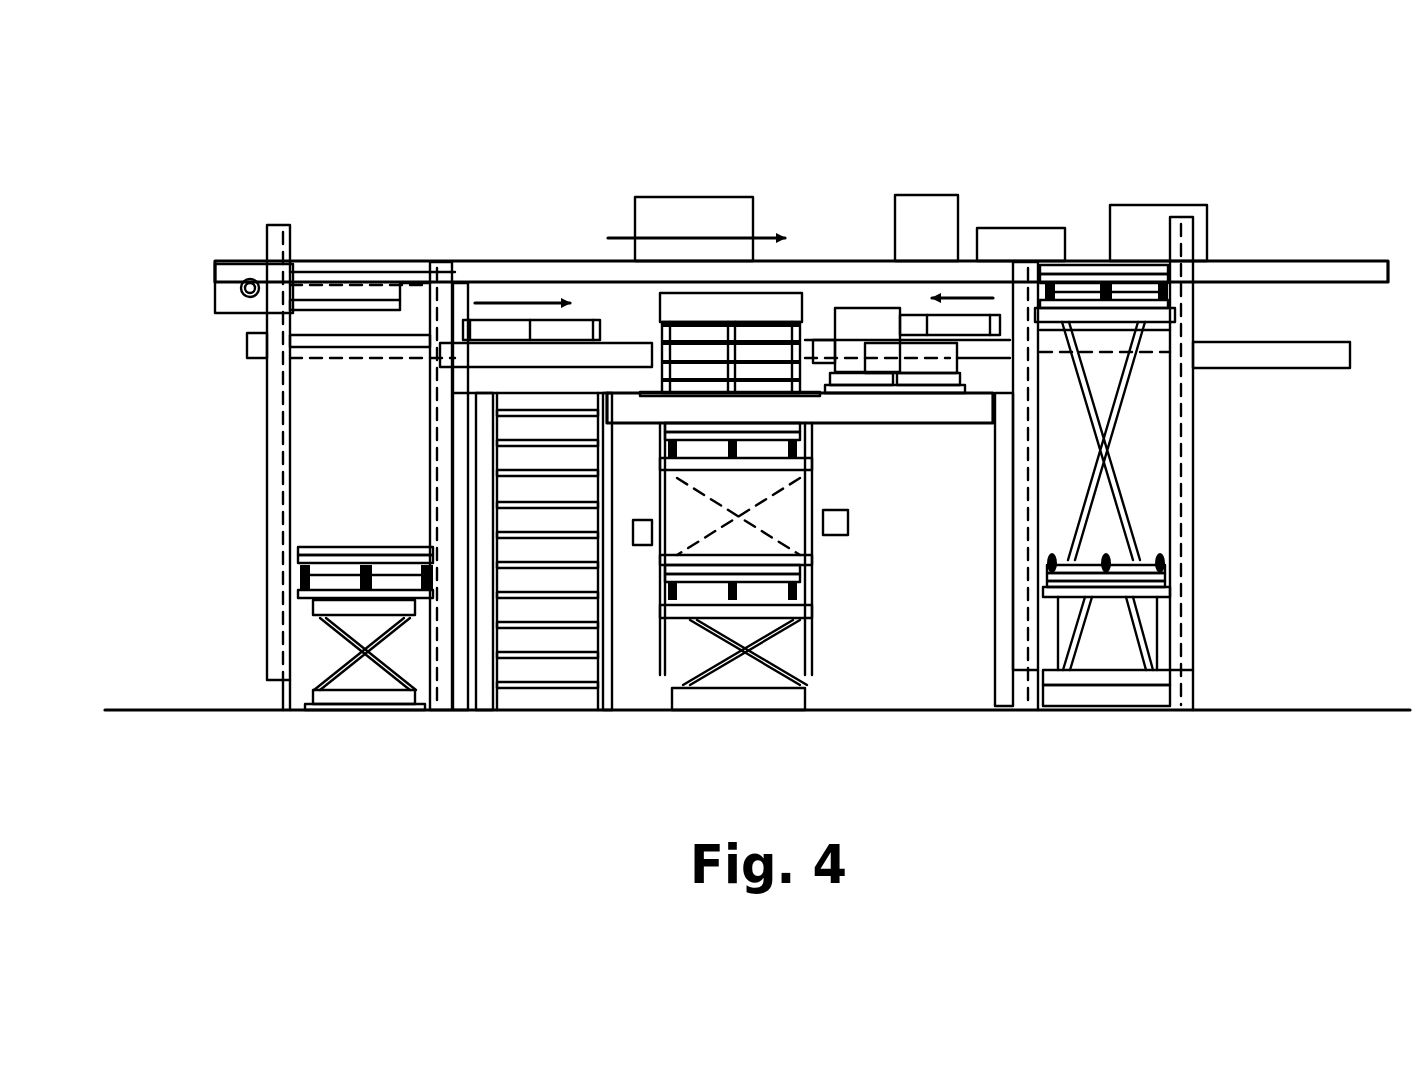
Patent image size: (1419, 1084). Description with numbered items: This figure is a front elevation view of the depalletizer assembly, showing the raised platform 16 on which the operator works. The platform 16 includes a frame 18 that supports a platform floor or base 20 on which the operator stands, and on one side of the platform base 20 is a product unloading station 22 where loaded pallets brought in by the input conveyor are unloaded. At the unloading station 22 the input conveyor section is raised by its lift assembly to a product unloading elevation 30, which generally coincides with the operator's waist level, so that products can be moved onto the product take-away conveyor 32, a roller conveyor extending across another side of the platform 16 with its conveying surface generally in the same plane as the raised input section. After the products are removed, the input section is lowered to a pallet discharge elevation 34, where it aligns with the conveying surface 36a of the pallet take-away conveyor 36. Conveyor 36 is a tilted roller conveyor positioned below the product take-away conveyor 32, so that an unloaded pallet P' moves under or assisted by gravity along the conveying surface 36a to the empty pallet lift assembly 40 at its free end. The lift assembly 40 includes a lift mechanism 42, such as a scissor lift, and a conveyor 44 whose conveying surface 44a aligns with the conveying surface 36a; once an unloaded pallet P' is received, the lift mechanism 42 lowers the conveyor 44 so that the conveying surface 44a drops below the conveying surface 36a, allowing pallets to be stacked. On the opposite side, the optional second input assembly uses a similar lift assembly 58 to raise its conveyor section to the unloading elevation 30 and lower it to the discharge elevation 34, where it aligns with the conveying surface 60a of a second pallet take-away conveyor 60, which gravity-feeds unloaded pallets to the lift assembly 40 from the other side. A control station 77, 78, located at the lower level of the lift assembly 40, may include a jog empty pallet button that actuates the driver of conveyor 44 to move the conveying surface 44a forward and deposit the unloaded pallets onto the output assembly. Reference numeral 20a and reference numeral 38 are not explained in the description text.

The raised platform 16 is at (466, 722).
The frame 18 is at (992, 630).
The platform floor or base 20 is at (847, 395).
The stacking conveyor 20a is at (548, 692).
The product unloading station 22 is at (480, 385).
The product unloading elevation 30 is at (460, 262).
The product take-away conveyor 32 is at (541, 258).
The pallet discharge elevation 34 is at (367, 335).
The pallet take-away conveyor 36 is at (245, 350).
The conveying surface 36a is at (626, 340).
The lift post 38 is at (260, 637).
The empty pallet lift assembly 40 is at (834, 647).
The lift mechanism 42 is at (712, 675).
The conveyor 44 is at (690, 410).
The conveying surface 44a is at (717, 410).
The lift assembly 58 is at (1205, 608).
The second pallet take-away conveyor 60 is at (990, 365).
The conveying surface 60a is at (820, 335).
The control station 77 is at (835, 537).
The control station 78 is at (643, 547).
The unloaded pallet P' is at (801, 243).